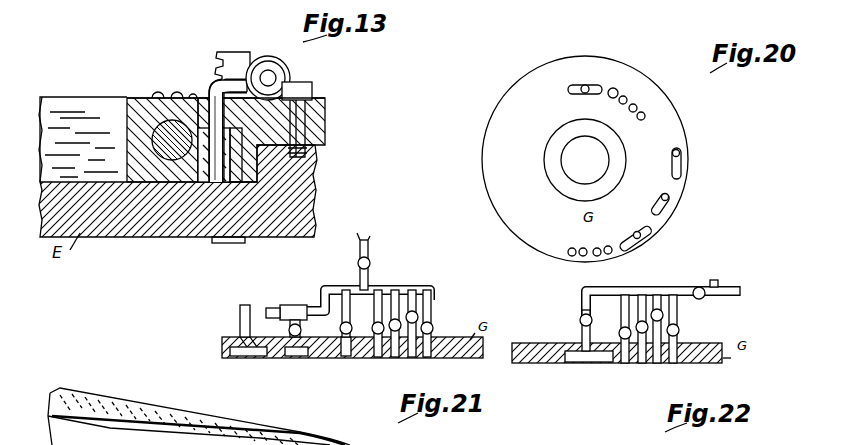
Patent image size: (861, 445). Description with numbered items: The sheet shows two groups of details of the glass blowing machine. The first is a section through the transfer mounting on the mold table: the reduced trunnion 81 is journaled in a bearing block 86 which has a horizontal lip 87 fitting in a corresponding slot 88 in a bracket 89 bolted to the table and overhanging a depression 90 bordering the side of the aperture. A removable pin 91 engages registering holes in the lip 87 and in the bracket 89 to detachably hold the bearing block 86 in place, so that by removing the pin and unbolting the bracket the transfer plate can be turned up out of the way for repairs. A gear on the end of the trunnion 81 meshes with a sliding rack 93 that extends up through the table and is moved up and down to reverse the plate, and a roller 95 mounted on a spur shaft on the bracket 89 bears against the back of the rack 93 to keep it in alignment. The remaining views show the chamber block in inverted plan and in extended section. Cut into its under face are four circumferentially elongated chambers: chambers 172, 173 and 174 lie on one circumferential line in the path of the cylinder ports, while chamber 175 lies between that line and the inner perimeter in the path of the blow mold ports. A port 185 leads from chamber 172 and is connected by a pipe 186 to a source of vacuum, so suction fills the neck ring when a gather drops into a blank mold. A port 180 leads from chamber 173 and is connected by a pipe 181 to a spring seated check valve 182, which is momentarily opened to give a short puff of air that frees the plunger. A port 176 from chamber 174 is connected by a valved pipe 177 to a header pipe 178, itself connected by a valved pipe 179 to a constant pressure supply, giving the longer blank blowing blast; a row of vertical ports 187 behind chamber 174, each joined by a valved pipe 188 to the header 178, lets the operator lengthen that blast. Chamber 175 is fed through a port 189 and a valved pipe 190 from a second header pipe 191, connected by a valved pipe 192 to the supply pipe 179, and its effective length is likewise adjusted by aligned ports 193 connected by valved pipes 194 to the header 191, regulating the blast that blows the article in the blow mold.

In FIG. 13, the trunnion 81 is at (157, 162).
In FIG. 13, the bearing block 86 is at (134, 95).
In FIG. 13, the horizontal lip 87 is at (203, 150).
In FIG. 13, the slot 88 is at (212, 157).
In FIG. 13, the bracket 89 is at (327, 118).
In FIG. 13, the depression 90 is at (143, 190).
In FIG. 13, the removable pin 91 is at (210, 88).
In FIG. 13, the sliding rack 93 is at (250, 55).
In FIG. 13, the roller 95 is at (288, 73).
In FIG. 20, the chamber 172 is at (678, 162).
In FIG. 21, the chamber 172 is at (255, 356).
In FIG. 20, the chamber 173 is at (673, 200).
In FIG. 21, the chamber 173 is at (316, 358).
In FIG. 20, the chamber 174 is at (647, 232).
In FIG. 21, the chamber 174 is at (350, 358).
In FIG. 20, the chamber 175 is at (599, 95).
In FIG. 22, the chamber 175 is at (590, 363).
In FIG. 20, the port 176 is at (640, 240).
In FIG. 21, the port 176 is at (380, 358).
In FIG. 21, the valved pipe 177 is at (350, 312).
In FIG. 21, the header pipe 178 is at (403, 285).
In FIG. 21, the valved pipe 179 is at (369, 250).
In FIG. 20, the port 180 is at (672, 206).
In FIG. 21, the port 180 is at (312, 357).
In FIG. 21, the pipe 181 is at (289, 330).
In FIG. 21, the spring seated check valve 182 is at (300, 305).
In FIG. 20, the port 185 is at (681, 152).
In FIG. 21, the port 185 is at (230, 338).
In FIG. 21, the pipe 186 is at (243, 305).
In FIG. 20, the vertical ports 187 is at (573, 256).
In FIG. 21, the vertical ports 187 is at (396, 358).
In FIG. 21, the valved pipe 188 is at (431, 309).
In FIG. 20, the port 189 is at (586, 88).
In FIG. 22, the port 189 is at (580, 347).
In FIG. 22, the valved pipe 190 is at (582, 305).
In FIG. 22, the header pipe 191 is at (722, 280).
In FIG. 22, the valved pipe 192 is at (710, 284).
In FIG. 20, the ports 193 is at (617, 91).
In FIG. 22, the ports 193 is at (668, 364).
In FIG. 22, the valved pipes 194 is at (682, 315).